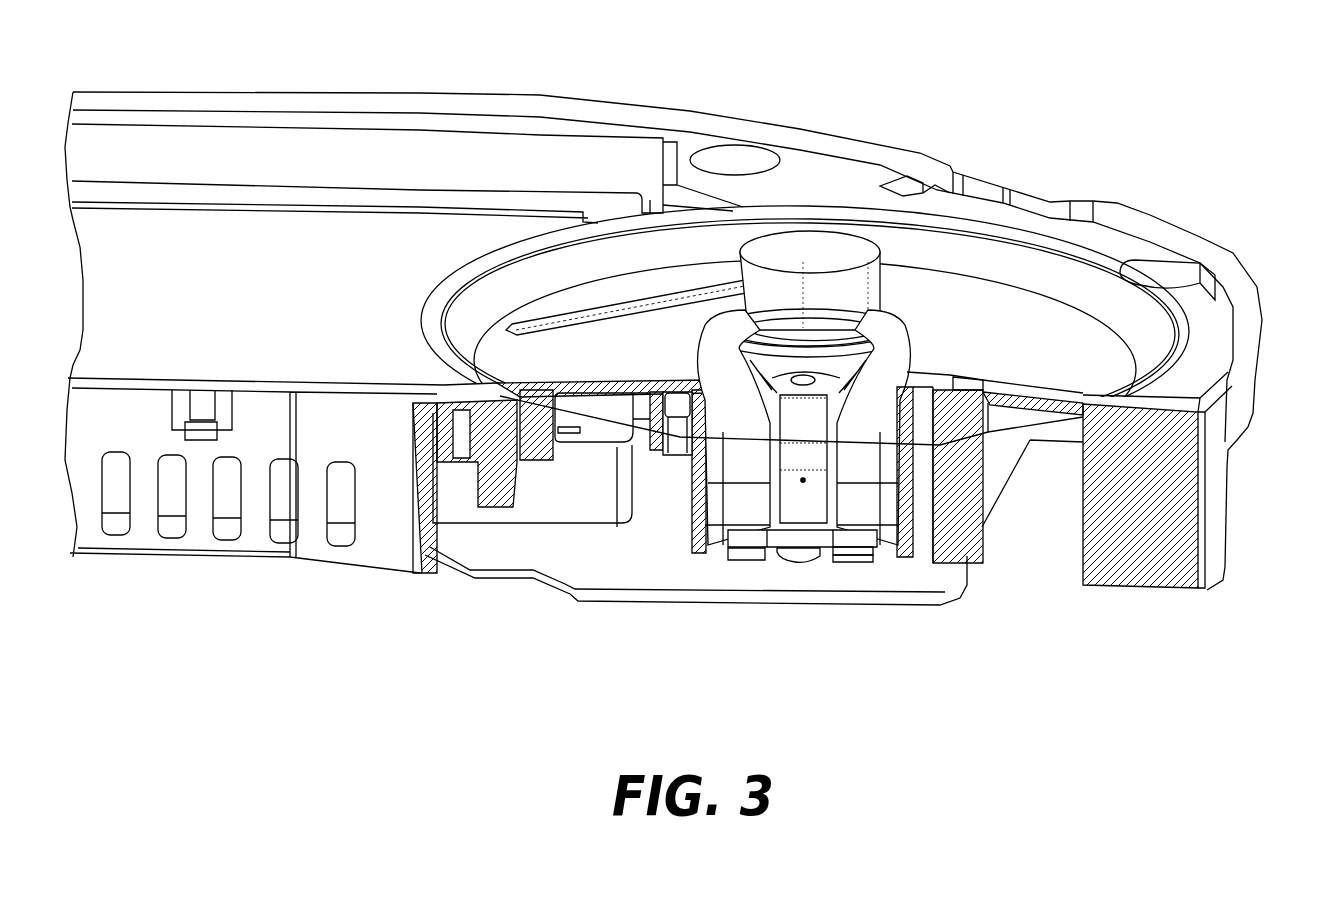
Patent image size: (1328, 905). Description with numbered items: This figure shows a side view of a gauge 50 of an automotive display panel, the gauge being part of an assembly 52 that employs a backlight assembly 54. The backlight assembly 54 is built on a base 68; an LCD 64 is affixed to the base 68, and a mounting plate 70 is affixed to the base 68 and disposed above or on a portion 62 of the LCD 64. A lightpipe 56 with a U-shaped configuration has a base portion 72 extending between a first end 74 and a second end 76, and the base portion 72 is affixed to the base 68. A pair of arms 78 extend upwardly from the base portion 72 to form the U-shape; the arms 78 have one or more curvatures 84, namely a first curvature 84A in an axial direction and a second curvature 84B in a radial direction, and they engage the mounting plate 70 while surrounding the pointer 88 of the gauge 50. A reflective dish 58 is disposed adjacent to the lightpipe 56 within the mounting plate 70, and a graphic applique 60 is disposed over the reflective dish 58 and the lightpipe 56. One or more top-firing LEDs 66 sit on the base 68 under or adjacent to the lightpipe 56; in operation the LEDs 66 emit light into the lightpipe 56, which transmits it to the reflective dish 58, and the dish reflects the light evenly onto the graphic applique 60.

The gauge 50 is at (1113, 234).
The latch assembly 52 is at (1183, 101).
The backlight assembly 54 is at (1226, 157).
The lightpipe 56 is at (740, 507).
The reflective dish 58 is at (912, 243).
The graphic applique 60 is at (1155, 340).
The portion of the LCD 62 is at (548, 206).
The LCD 64 is at (168, 232).
The top-firing LEDs 66 is at (753, 561).
The base 68 is at (608, 601).
The mounting plate 70 is at (1248, 306).
The base portion 72 is at (797, 563).
The first end 74 is at (722, 545).
The second end 76 is at (848, 556).
The pair of arms 78 is at (740, 470).
The curvatures 84 is at (922, 512).
The first curvature 84A is at (935, 473).
The second curvature 84B is at (910, 322).
The pointer 88 is at (668, 318).